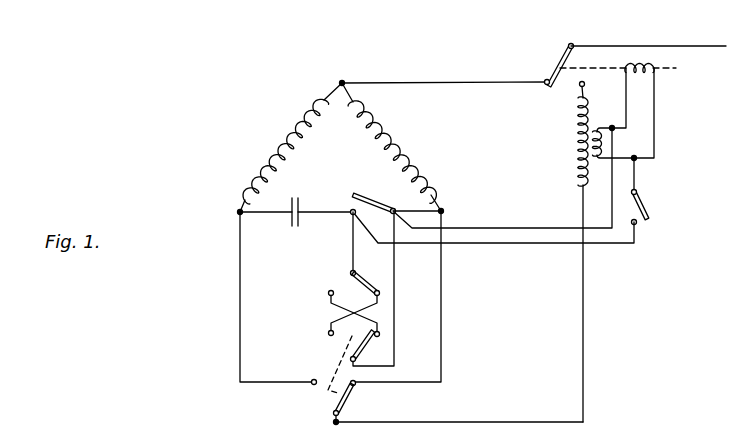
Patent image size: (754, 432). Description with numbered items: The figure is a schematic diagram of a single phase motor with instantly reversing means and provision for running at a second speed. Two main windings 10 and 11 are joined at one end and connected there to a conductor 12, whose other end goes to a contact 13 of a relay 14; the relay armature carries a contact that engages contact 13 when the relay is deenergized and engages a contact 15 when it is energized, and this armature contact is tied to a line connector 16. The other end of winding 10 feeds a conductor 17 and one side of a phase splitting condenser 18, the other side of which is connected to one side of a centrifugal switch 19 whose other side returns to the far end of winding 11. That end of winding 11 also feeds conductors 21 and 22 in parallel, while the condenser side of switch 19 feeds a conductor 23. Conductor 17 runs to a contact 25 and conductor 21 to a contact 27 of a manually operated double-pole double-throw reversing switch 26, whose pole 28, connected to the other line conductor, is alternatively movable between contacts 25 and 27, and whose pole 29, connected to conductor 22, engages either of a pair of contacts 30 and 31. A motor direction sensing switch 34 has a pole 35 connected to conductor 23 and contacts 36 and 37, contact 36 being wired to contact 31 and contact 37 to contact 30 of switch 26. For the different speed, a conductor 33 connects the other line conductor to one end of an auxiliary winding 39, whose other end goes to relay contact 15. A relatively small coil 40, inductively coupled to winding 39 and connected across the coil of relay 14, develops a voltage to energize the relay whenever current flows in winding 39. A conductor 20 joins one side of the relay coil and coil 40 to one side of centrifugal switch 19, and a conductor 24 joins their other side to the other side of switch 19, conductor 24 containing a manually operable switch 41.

The main winding 10 is at (287, 137).
The main winding 11 is at (393, 140).
The conductor 12 is at (394, 82).
The relay contact 13 is at (547, 80).
The relay 14 is at (610, 73).
The relay contact 15 is at (575, 87).
The line connector 16 is at (680, 46).
The conductor 17 is at (238, 288).
The phase splitting condenser 18 is at (298, 194).
The centrifugal switch 19 is at (347, 195).
The conductor 20 is at (477, 224).
The conductor 21 is at (450, 272).
The conductor 22 is at (397, 279).
The conductor 23 is at (352, 233).
The conductor 24 is at (378, 249).
The contact 25 is at (312, 379).
The double-pole double-throw switch 26 is at (322, 357).
The contact 27 is at (355, 385).
The pole 28 is at (340, 400).
The pole 29 is at (360, 351).
The contact 30 is at (329, 332).
The contact 31 is at (379, 334).
The conductor 33 is at (537, 422).
The motor direction sensing switch 34 is at (334, 279).
The pole 35 is at (365, 281).
The contact 36 is at (329, 293).
The contact 37 is at (381, 292).
The auxiliary winding 39 is at (575, 158).
The coil 40 is at (596, 164).
The manually operable switch 41 is at (648, 226).